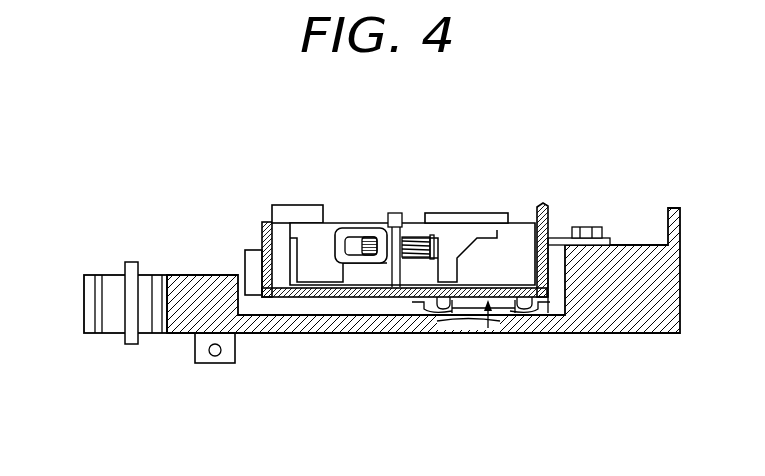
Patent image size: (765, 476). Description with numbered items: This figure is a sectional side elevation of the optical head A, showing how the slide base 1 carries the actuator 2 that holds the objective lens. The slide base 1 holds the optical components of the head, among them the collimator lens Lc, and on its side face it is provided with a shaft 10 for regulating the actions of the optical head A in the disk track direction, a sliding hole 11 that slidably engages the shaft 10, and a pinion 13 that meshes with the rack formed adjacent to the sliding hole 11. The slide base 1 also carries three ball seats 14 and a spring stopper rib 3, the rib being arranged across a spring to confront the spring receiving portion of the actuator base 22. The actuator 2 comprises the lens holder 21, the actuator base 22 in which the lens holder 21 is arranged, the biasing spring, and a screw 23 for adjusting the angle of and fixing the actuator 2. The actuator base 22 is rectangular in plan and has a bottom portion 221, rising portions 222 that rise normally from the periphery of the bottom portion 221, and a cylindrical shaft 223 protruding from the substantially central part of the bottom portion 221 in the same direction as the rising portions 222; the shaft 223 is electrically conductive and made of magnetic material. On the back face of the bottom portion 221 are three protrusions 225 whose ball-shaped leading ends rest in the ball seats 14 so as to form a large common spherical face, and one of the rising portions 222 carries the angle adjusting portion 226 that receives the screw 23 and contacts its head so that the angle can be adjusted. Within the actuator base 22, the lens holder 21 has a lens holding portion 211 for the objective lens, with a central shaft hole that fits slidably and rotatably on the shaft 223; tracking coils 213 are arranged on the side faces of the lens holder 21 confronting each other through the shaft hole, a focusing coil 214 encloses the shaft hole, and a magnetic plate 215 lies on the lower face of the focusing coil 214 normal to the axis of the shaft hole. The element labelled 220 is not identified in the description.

The optical head A is at (124, 176).
The slide base 1 is at (645, 258).
The actuator 2 is at (397, 287).
The spring stopper rib 3 is at (255, 268).
The shaft 10 is at (209, 349).
The sliding hole 11 is at (212, 364).
The pinion 13 is at (120, 287).
The ball seats 14 is at (440, 308).
The lens holder 21 is at (403, 251).
The actuator base 22 is at (268, 222).
The screw 23 is at (588, 228).
The lens holding portion 211 is at (490, 228).
The tracking coils 213 is at (364, 228).
The focusing coil 214 is at (428, 237).
The magnetic plate 215 is at (388, 288).
The leaf spring 220 is at (496, 318).
The bottom portion 221 is at (323, 297).
The rising portions 222 is at (516, 232).
The cylindrical shaft 223 is at (395, 213).
The protrusions 225 is at (426, 312).
The angle adjusting portion 226 is at (597, 242).
The collimator lens Lc is at (486, 328).